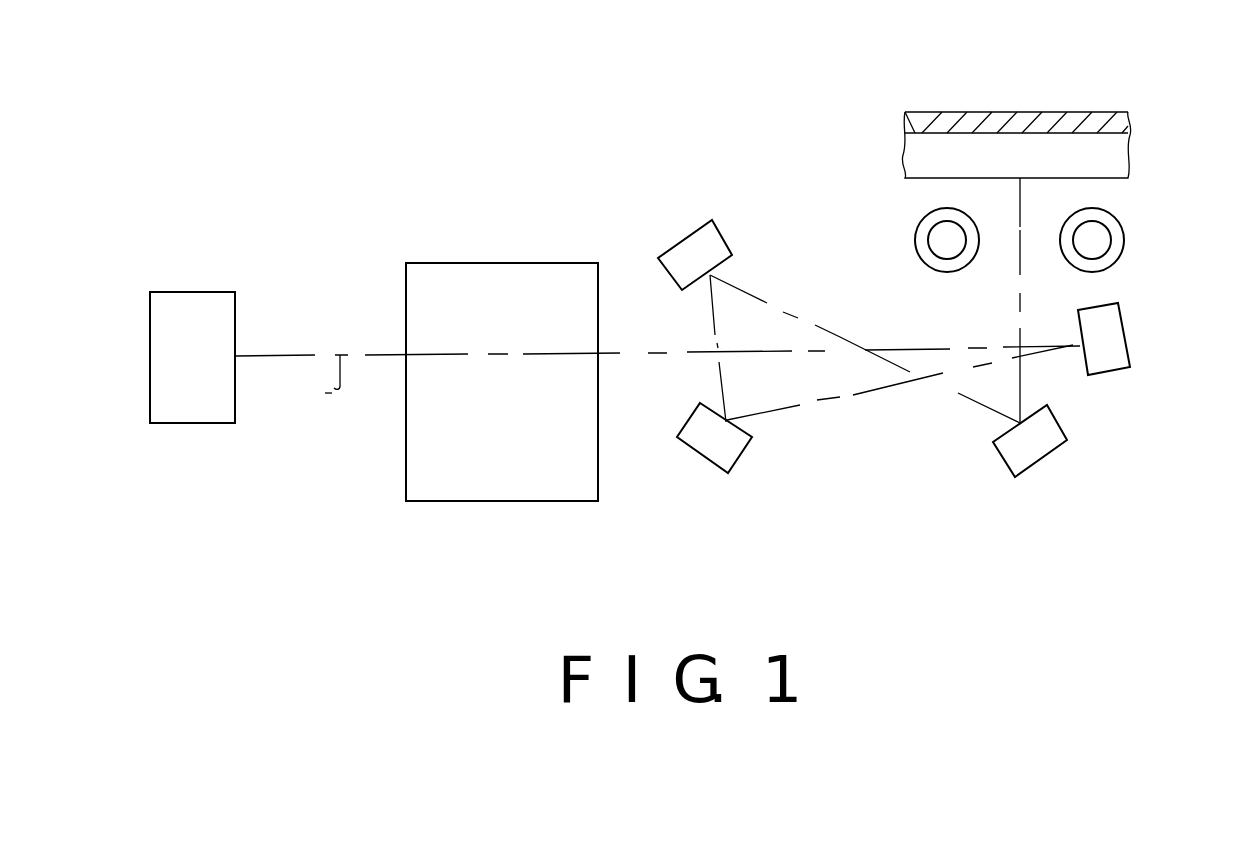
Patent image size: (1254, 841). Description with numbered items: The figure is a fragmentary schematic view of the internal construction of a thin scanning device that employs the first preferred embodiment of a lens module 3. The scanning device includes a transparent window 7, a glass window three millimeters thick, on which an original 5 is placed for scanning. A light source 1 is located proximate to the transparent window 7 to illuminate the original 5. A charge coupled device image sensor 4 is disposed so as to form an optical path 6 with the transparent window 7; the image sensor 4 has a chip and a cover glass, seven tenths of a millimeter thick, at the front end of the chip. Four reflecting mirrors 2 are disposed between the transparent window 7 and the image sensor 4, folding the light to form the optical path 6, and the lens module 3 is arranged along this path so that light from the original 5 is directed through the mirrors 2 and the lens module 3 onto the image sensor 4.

The light source 1 is at (1113, 248).
The reflecting mirrors 2 is at (712, 252).
The lens module 3 is at (447, 272).
The charge coupled device (CCD) image sensor 4 is at (211, 298).
The original 5 is at (1097, 120).
The optical path 6 is at (316, 396).
The transparent window 7 is at (1108, 157).